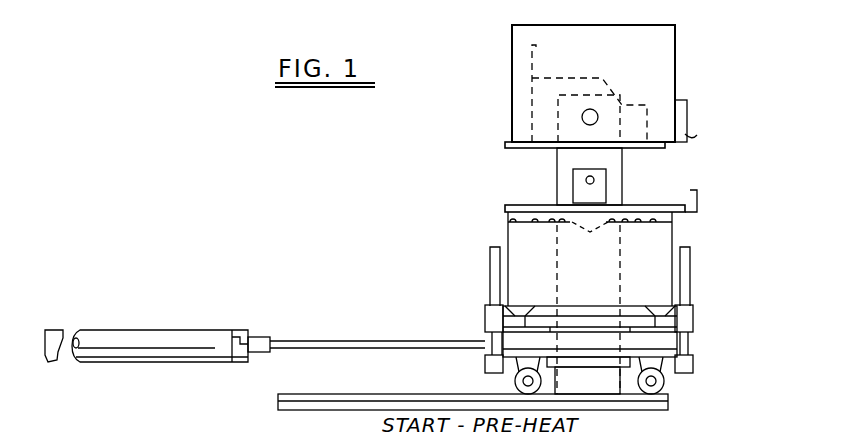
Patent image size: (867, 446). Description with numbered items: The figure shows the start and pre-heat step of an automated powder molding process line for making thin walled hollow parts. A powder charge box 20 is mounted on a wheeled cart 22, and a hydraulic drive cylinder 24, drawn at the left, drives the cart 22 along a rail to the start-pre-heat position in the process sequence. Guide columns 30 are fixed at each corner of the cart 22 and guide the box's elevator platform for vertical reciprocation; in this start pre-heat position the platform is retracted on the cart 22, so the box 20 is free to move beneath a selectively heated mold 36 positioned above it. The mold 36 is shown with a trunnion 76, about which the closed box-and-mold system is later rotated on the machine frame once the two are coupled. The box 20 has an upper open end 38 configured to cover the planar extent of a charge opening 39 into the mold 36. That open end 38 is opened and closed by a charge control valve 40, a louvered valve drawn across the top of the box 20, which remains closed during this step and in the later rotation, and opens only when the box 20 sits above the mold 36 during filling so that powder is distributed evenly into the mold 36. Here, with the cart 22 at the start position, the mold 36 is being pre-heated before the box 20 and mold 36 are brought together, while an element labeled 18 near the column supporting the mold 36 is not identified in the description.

The support column 18 is at (557, 176).
The powder charge box 20 is at (680, 228).
The wheeled cart 22 is at (698, 343).
The hydraulic drive cylinder 24 is at (171, 321).
The guide columns 30 is at (490, 287).
The selectively heated mold 36 is at (684, 69).
The upper open end 38 is at (655, 203).
The charge opening 39 is at (655, 148).
The charge control valve 40 is at (527, 227).
The trunnions 76 is at (594, 110).